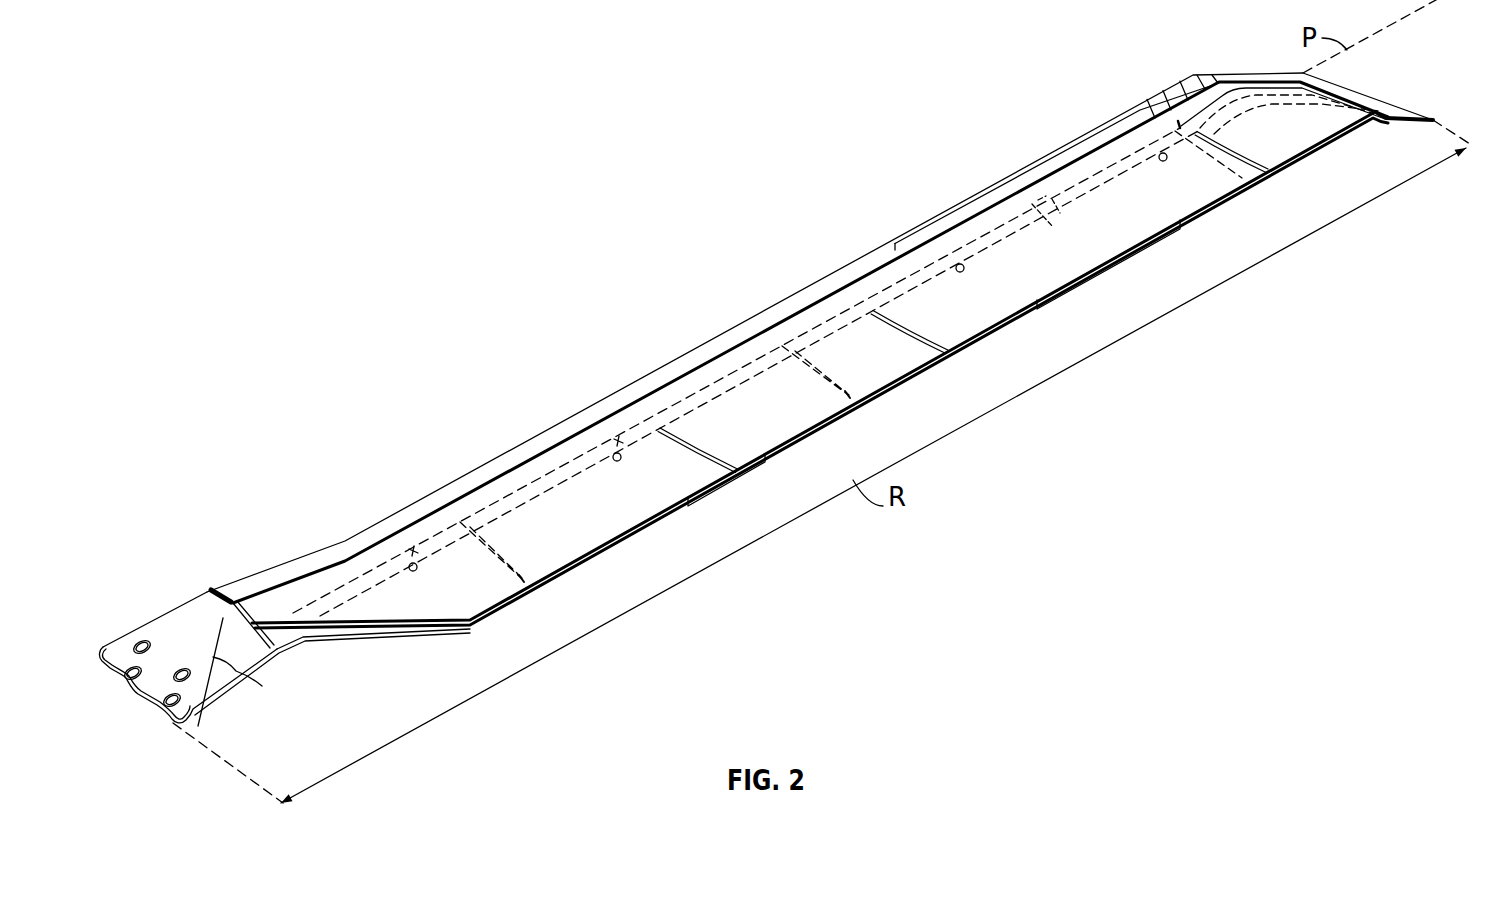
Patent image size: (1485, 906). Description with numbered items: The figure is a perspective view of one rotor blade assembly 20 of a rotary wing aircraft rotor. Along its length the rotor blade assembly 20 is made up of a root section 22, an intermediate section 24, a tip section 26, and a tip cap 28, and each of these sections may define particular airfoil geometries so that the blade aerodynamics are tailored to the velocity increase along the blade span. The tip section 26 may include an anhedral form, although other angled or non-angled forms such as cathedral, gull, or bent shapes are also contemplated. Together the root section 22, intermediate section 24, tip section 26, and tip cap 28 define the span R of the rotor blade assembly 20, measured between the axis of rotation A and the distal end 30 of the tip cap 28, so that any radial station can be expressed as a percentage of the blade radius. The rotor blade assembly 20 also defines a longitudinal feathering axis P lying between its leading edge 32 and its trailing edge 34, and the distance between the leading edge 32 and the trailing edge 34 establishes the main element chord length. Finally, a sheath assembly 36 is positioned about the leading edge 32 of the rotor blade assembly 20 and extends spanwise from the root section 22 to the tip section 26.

The rotor blade assembly 20 is at (780, 266).
The root section 22 is at (231, 580).
The intermediate section 24 is at (733, 323).
The tip section 26 is at (1184, 68).
The tip cap 28 is at (1362, 76).
The distal end 30 is at (1405, 112).
The leading edge 32 is at (880, 248).
The trailing edge 34 is at (873, 393).
The sheath assembly 36 is at (587, 420).